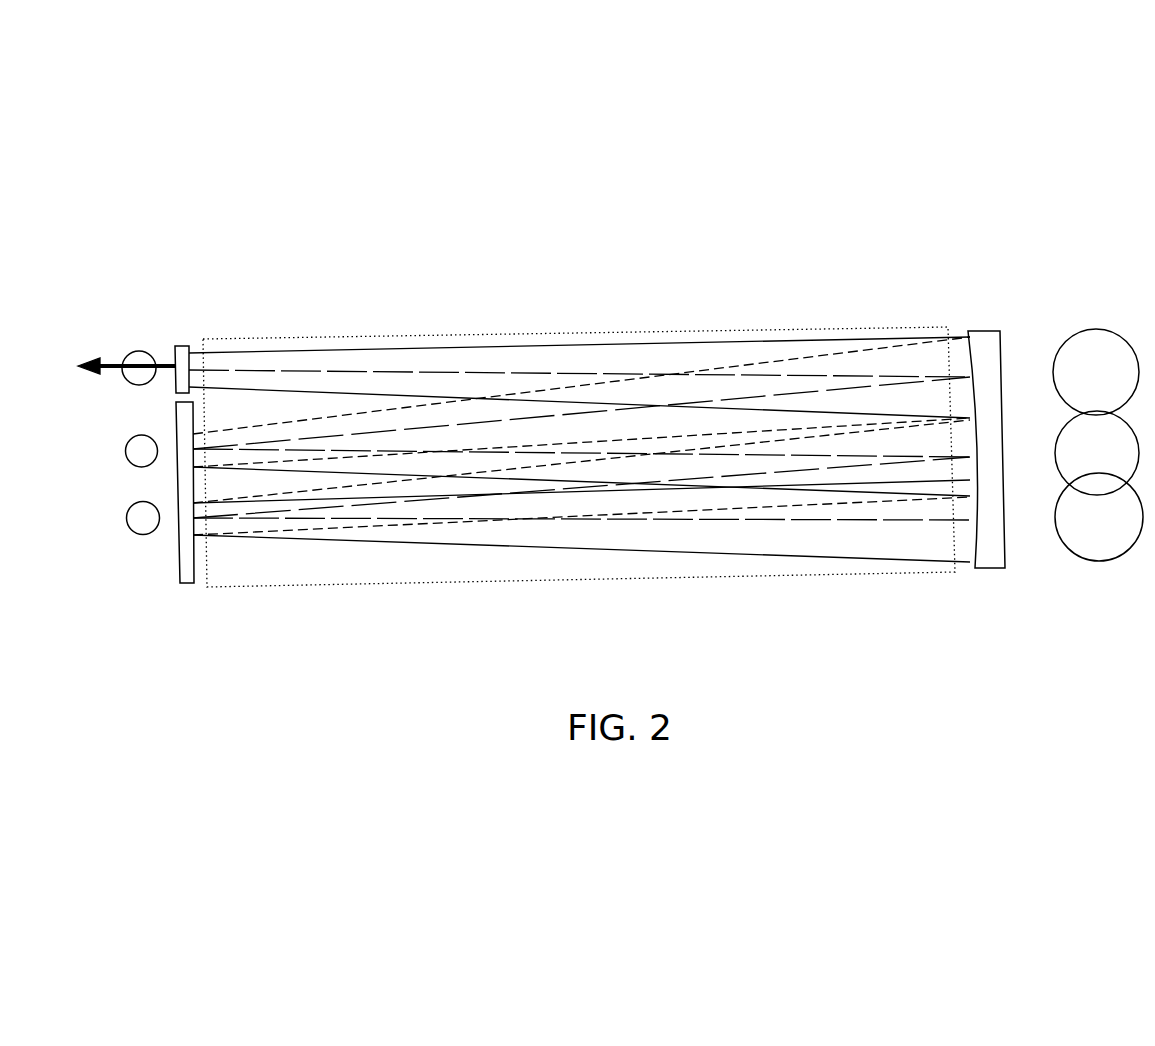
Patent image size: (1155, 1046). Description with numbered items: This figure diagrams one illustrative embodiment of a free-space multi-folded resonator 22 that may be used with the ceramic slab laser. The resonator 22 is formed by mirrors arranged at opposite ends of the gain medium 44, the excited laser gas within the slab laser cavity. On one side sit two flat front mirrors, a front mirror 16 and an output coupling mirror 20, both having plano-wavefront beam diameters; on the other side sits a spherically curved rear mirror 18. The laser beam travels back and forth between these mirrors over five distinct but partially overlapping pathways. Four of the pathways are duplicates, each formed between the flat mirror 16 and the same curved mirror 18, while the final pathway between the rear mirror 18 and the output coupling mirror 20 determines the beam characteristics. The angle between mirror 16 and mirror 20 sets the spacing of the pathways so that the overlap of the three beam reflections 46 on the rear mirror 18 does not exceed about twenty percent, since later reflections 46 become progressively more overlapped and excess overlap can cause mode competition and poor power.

The front mirror 16 is at (188, 585).
The rear mirror 18 is at (987, 333).
The output coupling mirror 20 is at (182, 344).
The resonator 22 is at (948, 168).
The gain medium 44 is at (598, 331).
The beam reflections 46 is at (1098, 575).